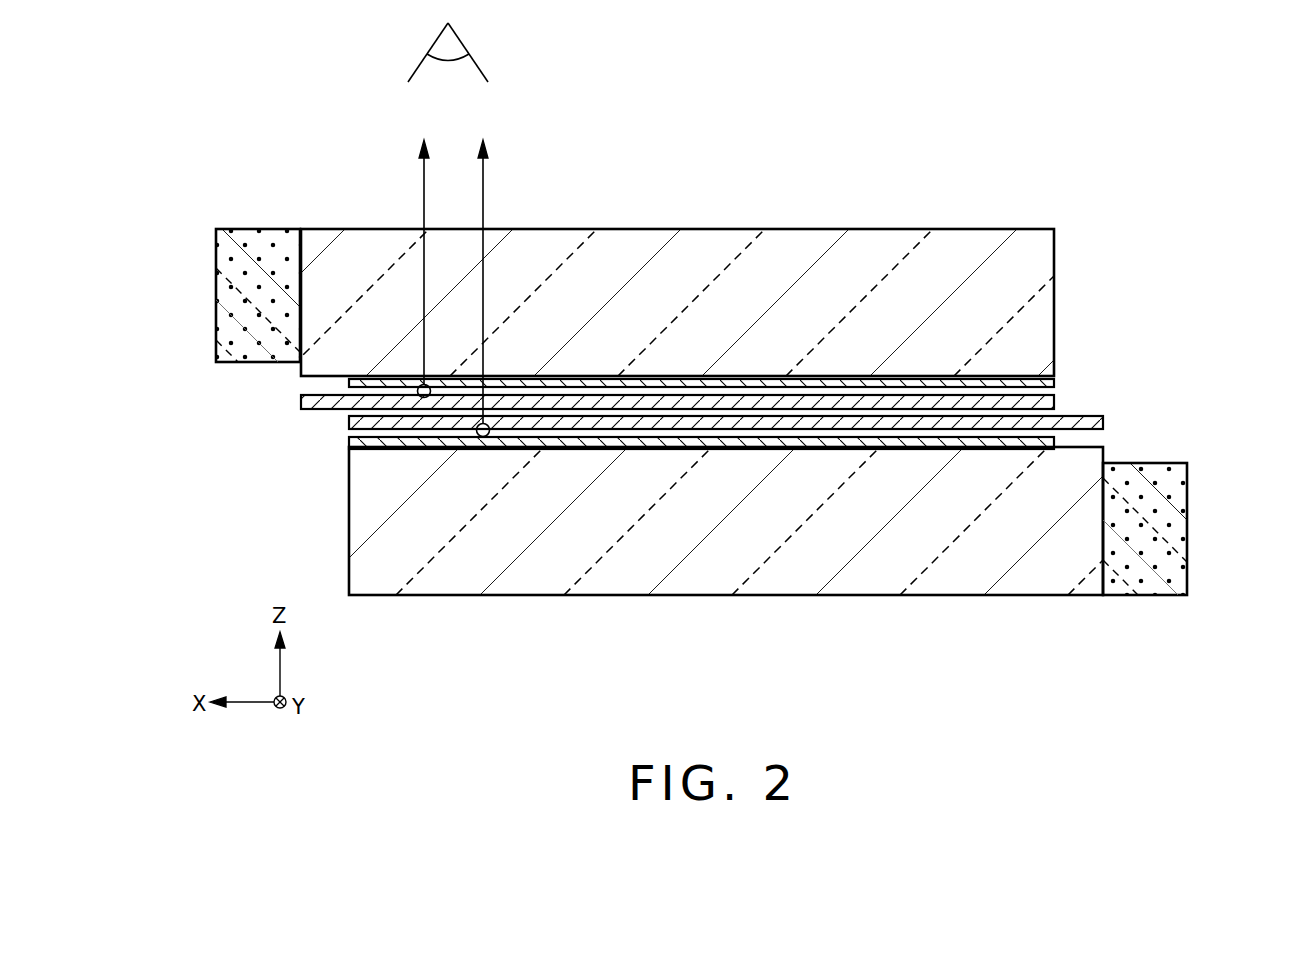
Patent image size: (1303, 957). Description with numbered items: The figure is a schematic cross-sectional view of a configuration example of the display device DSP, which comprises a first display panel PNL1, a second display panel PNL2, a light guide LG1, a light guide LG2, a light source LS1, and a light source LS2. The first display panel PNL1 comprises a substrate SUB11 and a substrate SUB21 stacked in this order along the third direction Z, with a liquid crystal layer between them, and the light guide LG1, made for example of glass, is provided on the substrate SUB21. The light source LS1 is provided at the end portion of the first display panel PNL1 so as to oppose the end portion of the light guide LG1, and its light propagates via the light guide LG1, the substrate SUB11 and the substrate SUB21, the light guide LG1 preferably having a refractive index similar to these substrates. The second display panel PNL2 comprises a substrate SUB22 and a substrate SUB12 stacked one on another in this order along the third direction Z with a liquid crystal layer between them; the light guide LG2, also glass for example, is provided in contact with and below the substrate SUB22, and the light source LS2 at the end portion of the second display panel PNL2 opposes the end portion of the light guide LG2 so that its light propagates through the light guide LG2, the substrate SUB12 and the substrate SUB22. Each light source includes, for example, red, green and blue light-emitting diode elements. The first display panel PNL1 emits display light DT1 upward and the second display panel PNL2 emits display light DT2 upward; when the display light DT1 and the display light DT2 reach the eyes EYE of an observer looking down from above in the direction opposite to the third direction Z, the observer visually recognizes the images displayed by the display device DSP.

The eyes of the observer EYE is at (463, 38).
The display device DSP is at (1028, 190).
The display light DT1 is at (423, 255).
The display light DT2 is at (483, 275).
The light source LS1 is at (226, 292).
The light source LS2 is at (1180, 537).
The light guide LG1 is at (1046, 298).
The light guide LG2 is at (360, 519).
The first display panel PNL1 is at (778, 387).
The second display panel PNL2 is at (625, 436).
The substrate SUB11 is at (1055, 401).
The substrate SUB21 is at (1055, 376).
The substrate SUB12 is at (348, 421).
The substrate SUB22 is at (348, 441).